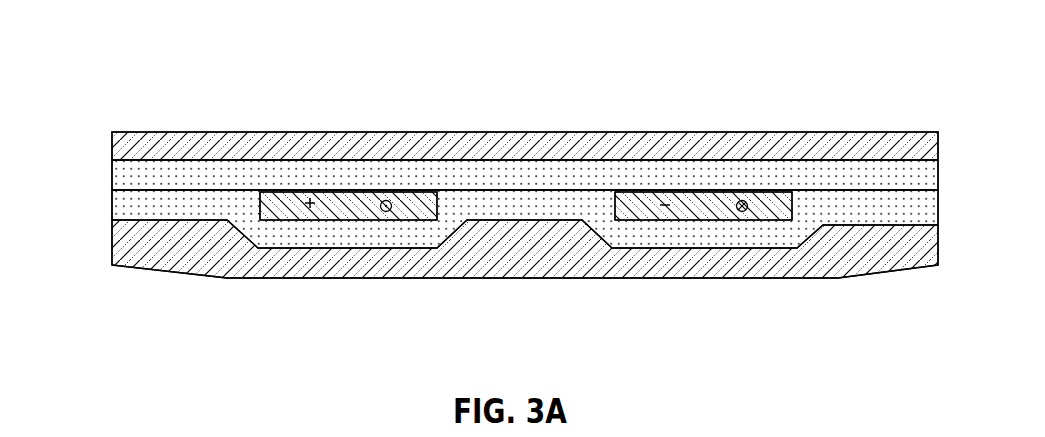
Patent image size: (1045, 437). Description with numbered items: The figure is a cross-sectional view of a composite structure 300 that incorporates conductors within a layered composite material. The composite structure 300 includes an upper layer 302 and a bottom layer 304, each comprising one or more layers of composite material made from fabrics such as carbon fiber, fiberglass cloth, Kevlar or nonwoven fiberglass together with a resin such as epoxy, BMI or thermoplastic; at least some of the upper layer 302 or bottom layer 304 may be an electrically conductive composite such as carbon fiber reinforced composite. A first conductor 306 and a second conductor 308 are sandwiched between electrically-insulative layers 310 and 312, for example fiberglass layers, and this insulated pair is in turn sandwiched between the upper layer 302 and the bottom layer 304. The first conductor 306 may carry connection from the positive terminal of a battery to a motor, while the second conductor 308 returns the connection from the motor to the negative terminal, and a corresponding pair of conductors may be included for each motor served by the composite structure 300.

The composite structure 300 is at (486, 179).
The upper layer 302 is at (548, 134).
The bottom layer 304 is at (877, 260).
The first conductor 306 is at (338, 214).
The second conductor 308 is at (688, 214).
The electrically-insulative layer 310 is at (125, 178).
The electrically-insulative layer 312 is at (120, 203).